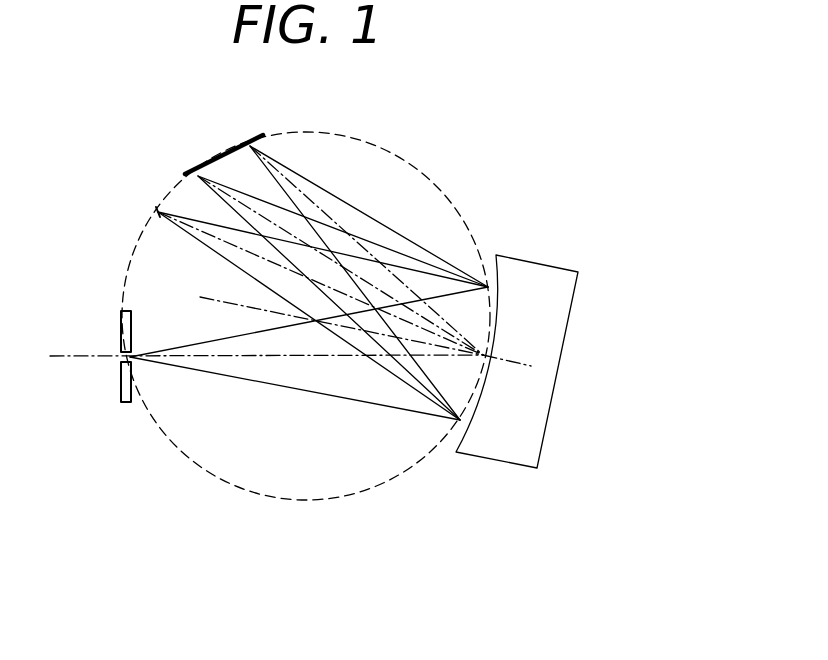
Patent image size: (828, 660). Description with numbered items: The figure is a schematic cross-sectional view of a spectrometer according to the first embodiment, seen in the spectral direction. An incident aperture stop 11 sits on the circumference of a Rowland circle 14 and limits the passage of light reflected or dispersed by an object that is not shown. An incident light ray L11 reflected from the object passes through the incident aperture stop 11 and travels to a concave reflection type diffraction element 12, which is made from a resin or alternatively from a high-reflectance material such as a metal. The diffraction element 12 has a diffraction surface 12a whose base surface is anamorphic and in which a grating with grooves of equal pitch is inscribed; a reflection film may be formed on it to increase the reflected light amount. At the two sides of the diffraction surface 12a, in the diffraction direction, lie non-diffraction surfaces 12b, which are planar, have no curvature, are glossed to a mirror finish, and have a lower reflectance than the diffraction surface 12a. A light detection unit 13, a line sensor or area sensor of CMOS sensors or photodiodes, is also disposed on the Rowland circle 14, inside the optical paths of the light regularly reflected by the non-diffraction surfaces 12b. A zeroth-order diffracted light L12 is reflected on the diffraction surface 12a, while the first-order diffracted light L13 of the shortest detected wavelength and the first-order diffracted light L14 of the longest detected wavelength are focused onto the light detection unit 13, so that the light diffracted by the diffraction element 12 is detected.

The incident aperture stop 11 is at (121, 395).
The diffraction element 12 is at (548, 417).
The diffraction surface 12a is at (483, 343).
The non-diffraction surface 12b is at (488, 287).
The light detection unit 13 is at (212, 162).
The Rowland circle 14 is at (337, 500).
The incident light ray L11 is at (178, 367).
The zeroth-order diffracted light L12 is at (197, 238).
The first-order diffracted light of shortest wavelength L13 is at (210, 192).
The first-order diffracted light of longest wavelength L14 is at (282, 165).